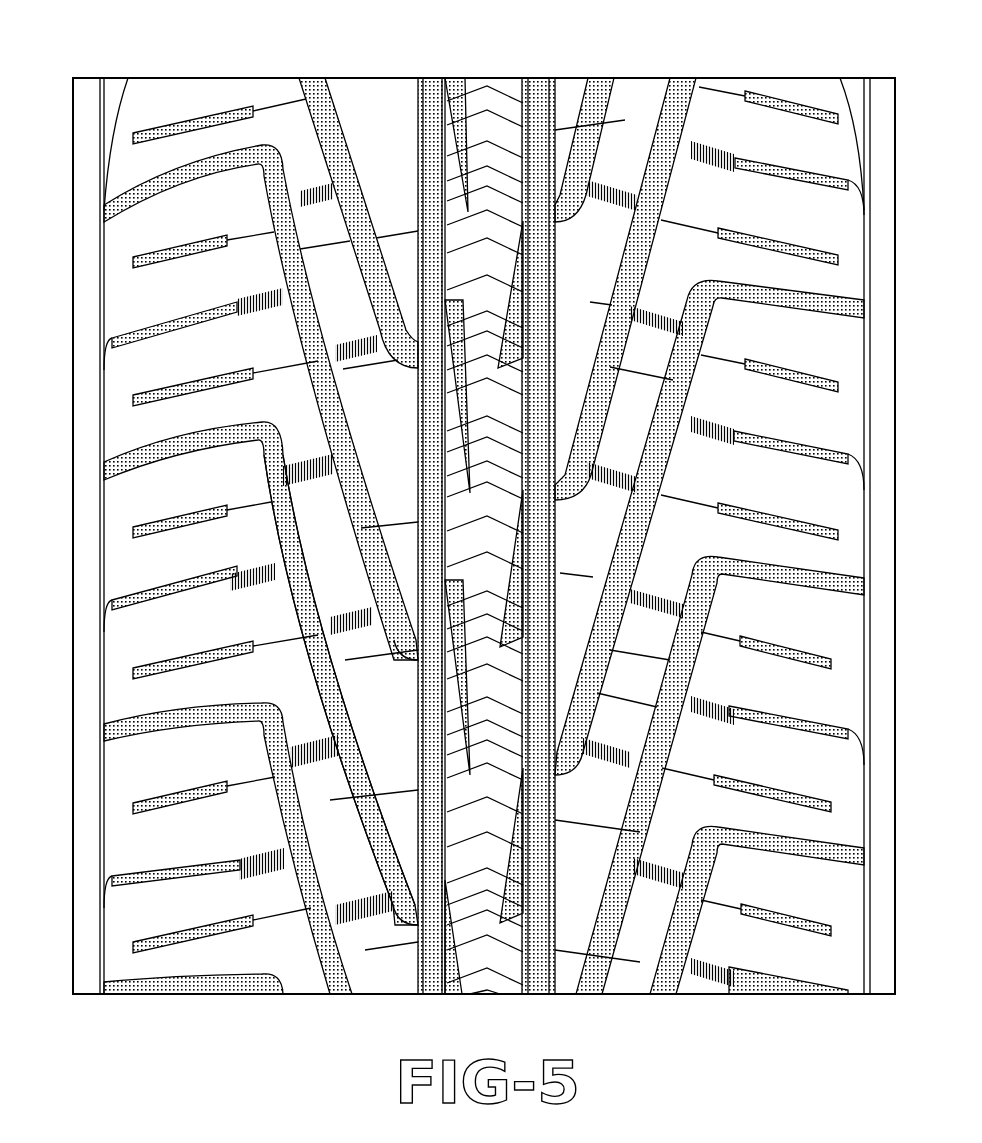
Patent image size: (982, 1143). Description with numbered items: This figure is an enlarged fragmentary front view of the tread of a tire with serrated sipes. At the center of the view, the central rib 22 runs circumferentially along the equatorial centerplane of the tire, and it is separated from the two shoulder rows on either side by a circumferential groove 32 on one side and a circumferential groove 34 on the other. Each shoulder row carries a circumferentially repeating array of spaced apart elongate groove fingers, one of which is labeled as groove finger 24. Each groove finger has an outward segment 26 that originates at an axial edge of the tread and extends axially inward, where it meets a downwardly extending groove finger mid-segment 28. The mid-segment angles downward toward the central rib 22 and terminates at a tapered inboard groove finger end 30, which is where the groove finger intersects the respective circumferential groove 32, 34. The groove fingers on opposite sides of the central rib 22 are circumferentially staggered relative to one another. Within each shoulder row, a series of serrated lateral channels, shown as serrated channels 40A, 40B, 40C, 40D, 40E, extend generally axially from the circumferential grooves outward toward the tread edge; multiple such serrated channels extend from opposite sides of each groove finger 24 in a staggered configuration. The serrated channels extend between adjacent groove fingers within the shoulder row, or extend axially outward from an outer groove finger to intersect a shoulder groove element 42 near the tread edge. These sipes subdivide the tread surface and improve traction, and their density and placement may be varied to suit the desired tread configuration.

The central rib 22 is at (486, 215).
The groove finger 24 is at (689, 375).
The outward segment 26 is at (167, 453).
The groove finger mid-segment 28 is at (302, 612).
The tapered inboard groove finger end 30 is at (413, 915).
The circumferential groove 32 is at (513, 605).
The circumferential groove 34 is at (432, 523).
The serrated channel 40A is at (605, 747).
The serrated channel 40B is at (648, 592).
The serrated channel 40C is at (605, 482).
The serrated channel 40D is at (709, 436).
The serrated channel 40E is at (659, 312).
The shoulder groove element 42 is at (779, 719).